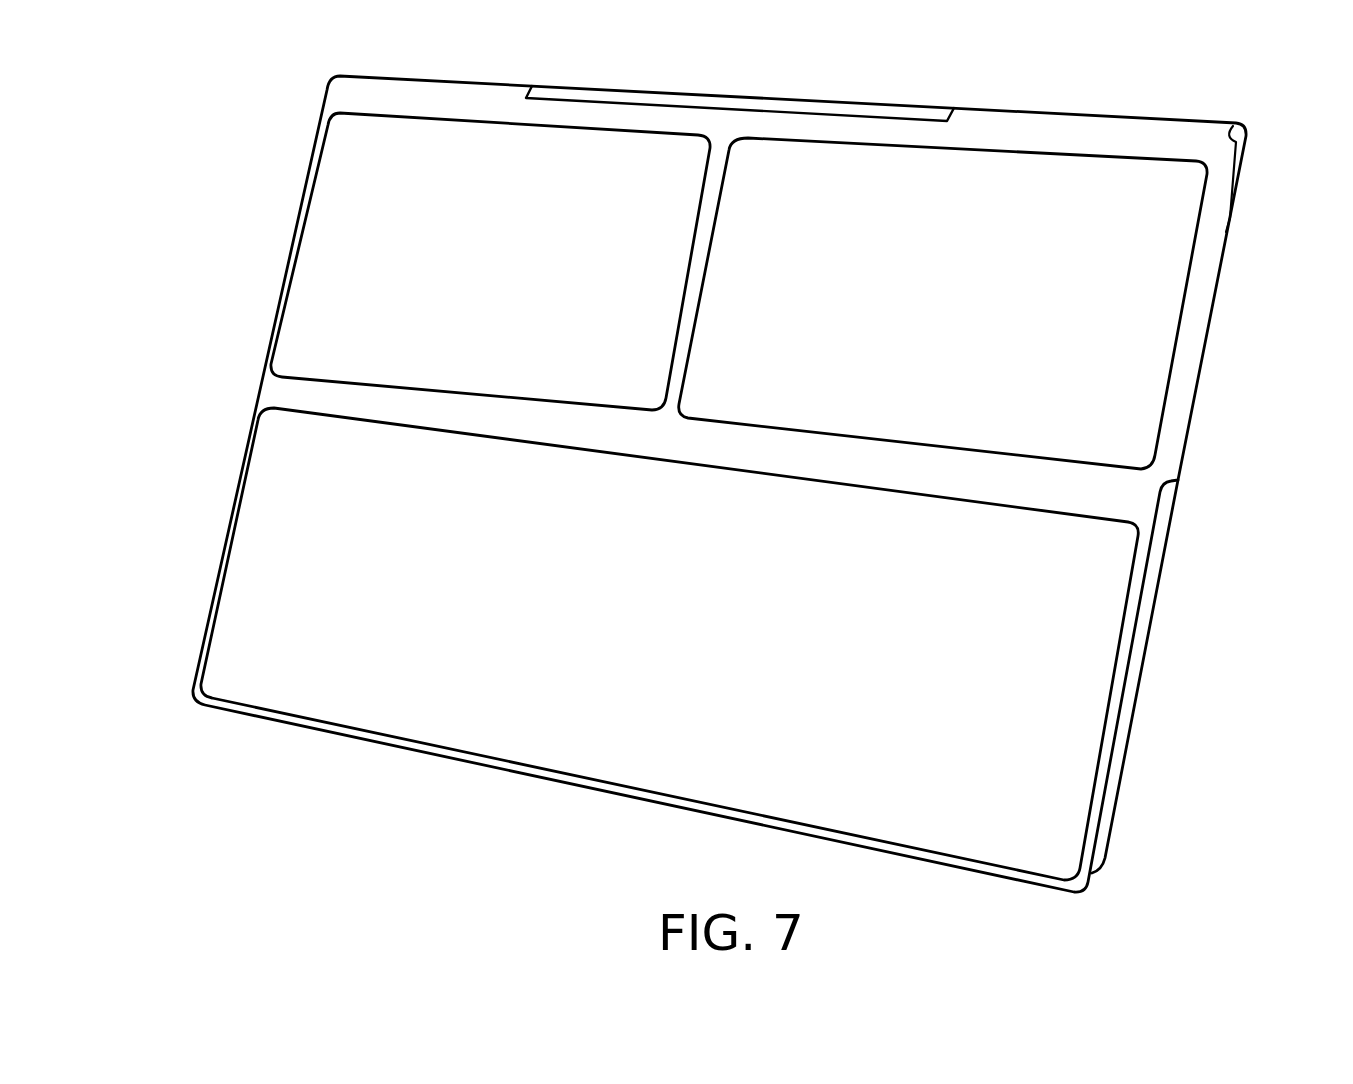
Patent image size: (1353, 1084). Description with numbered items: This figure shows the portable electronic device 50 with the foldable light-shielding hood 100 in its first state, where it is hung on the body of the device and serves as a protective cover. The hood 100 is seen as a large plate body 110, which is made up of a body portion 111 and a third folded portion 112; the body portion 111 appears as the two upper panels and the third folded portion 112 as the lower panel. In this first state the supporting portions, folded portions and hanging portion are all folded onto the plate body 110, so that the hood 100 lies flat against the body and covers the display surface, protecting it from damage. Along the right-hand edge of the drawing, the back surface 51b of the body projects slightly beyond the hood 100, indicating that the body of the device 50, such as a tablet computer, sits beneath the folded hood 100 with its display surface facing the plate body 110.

The foldable light-shielding hood 100 is at (271, 83).
The plate body 110 is at (155, 279).
The body portion 111 is at (313, 307).
The third folded portion 112 is at (318, 472).
The back surface 51b is at (1144, 667).
The portable electronic device 50 is at (1287, 905).